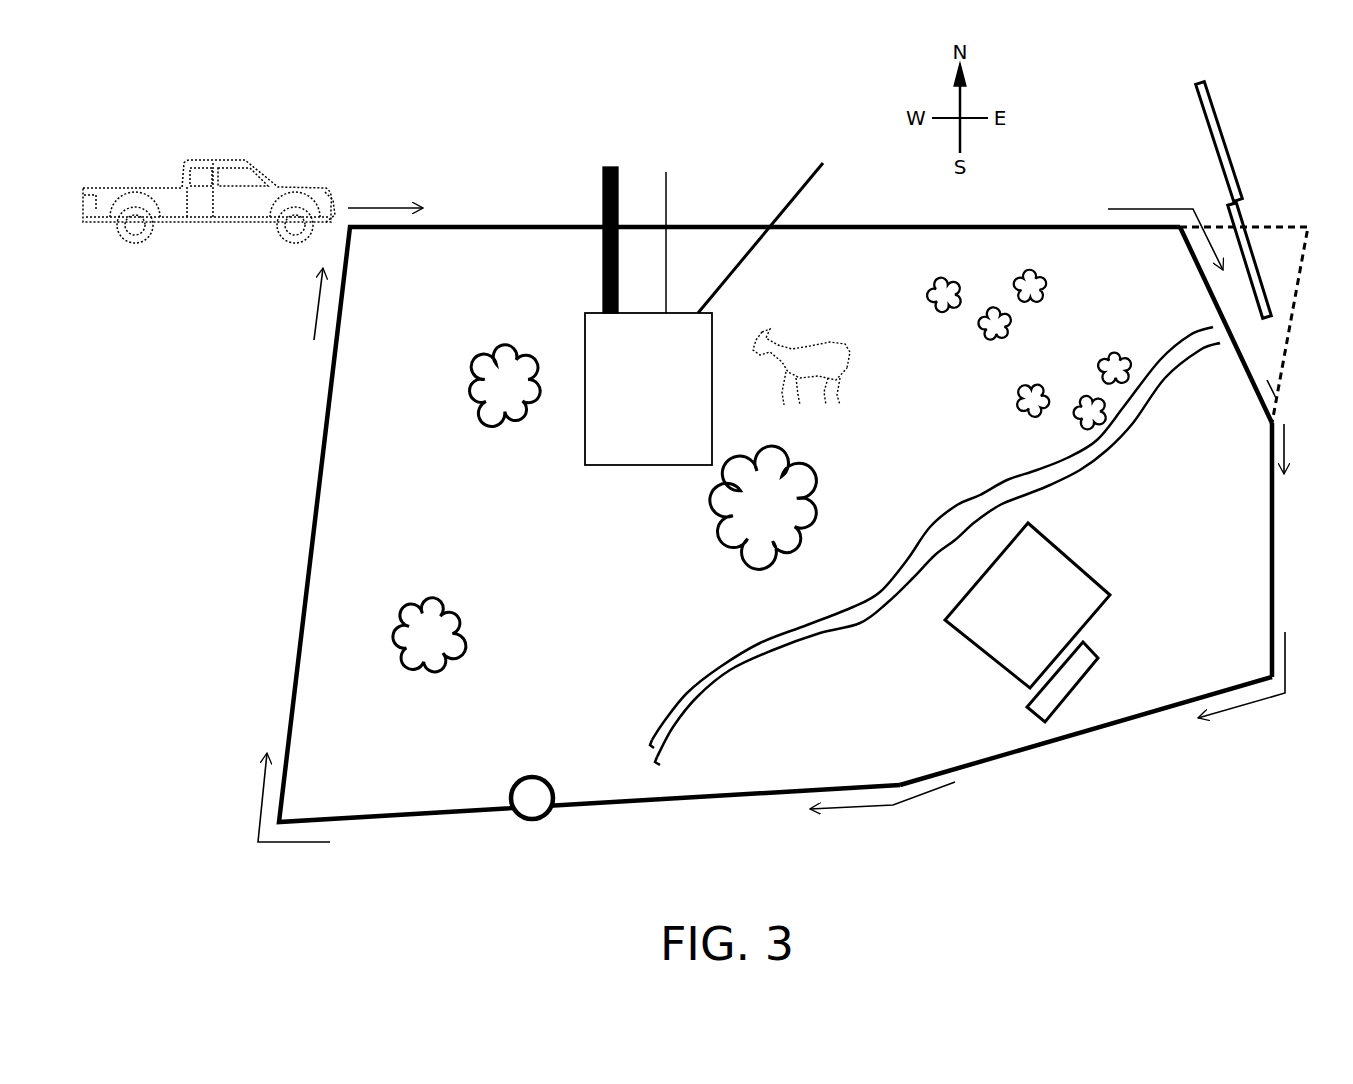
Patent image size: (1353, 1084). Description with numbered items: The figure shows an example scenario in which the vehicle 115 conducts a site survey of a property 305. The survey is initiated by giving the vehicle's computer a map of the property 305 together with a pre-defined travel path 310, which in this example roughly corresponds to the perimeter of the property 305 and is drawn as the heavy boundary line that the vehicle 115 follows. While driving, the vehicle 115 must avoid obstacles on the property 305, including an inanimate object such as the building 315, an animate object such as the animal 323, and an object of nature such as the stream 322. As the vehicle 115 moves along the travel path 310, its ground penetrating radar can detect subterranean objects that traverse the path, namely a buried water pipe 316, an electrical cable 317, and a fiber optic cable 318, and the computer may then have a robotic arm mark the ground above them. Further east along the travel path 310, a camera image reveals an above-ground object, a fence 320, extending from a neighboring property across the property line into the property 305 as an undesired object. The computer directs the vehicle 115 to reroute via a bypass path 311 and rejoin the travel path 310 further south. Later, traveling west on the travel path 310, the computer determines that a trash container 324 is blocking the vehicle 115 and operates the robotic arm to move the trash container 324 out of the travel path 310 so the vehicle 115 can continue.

The vehicle 115 is at (282, 160).
The property 305 is at (1142, 760).
The travel path 310 is at (443, 226).
The bypass path 311 is at (1203, 298).
The building 315 is at (648, 389).
The buried water pipe 316 is at (603, 207).
The electrical cable 317 is at (668, 203).
The fiber optic cable 318 is at (797, 190).
The fence 320 is at (1234, 146).
The stream 322 is at (686, 681).
The animal 323 is at (826, 339).
The trash container 324 is at (554, 773).